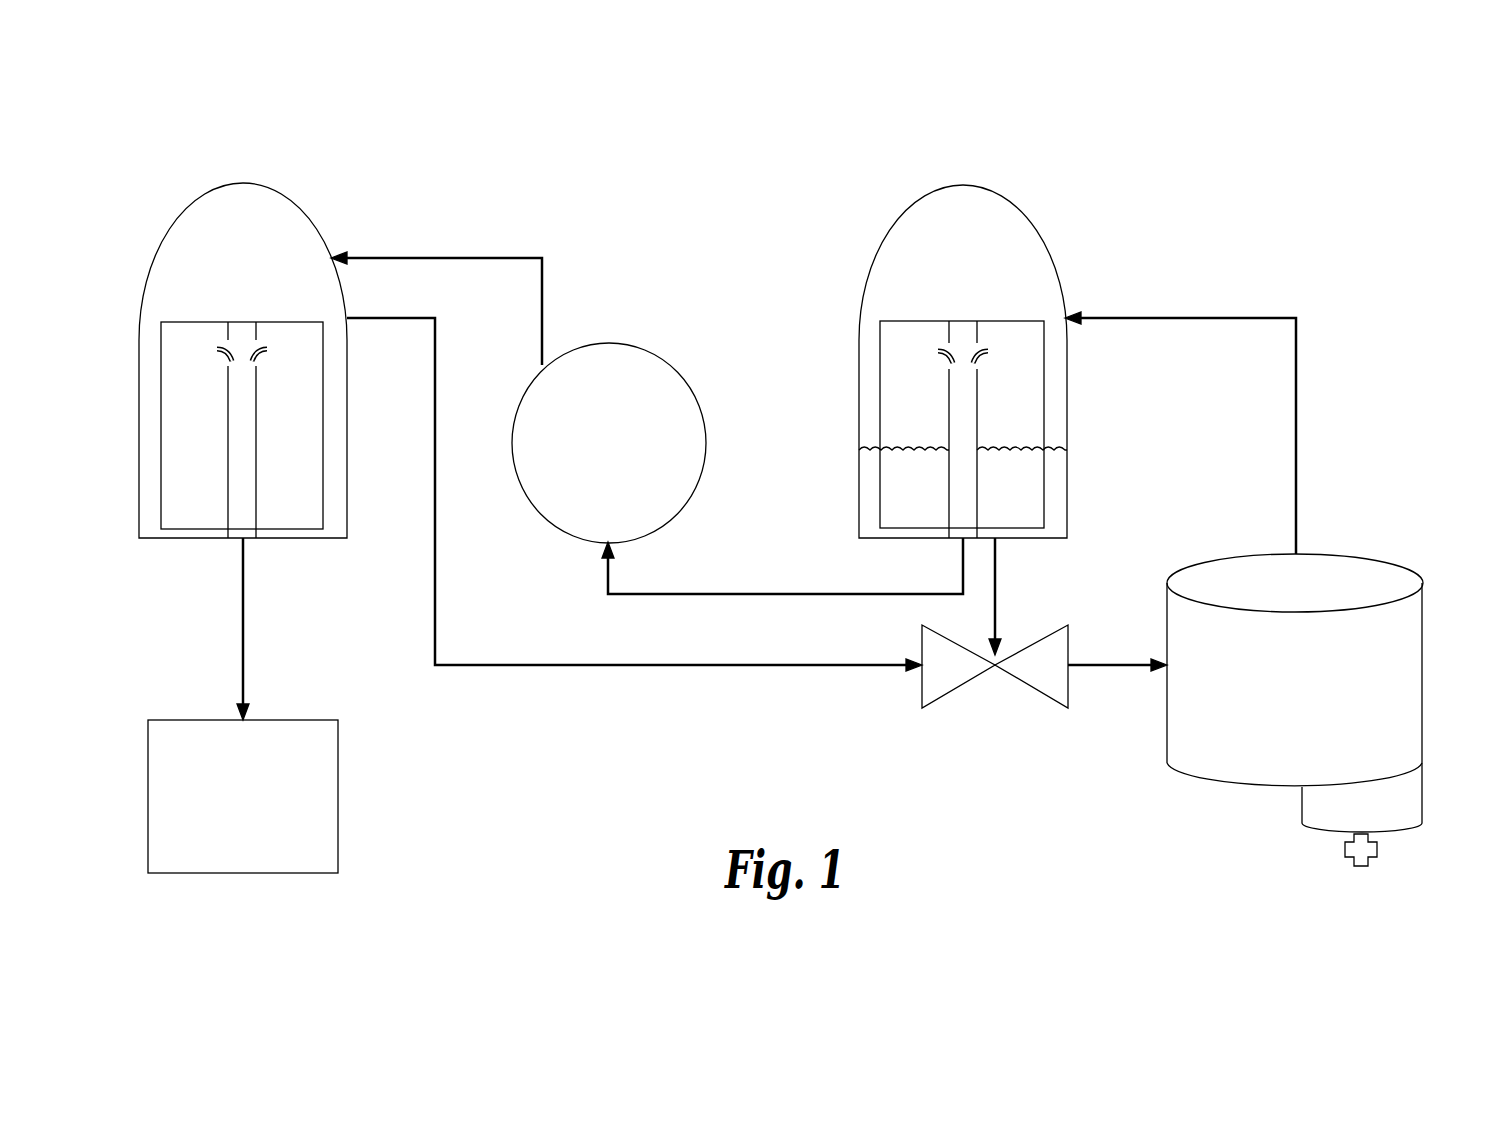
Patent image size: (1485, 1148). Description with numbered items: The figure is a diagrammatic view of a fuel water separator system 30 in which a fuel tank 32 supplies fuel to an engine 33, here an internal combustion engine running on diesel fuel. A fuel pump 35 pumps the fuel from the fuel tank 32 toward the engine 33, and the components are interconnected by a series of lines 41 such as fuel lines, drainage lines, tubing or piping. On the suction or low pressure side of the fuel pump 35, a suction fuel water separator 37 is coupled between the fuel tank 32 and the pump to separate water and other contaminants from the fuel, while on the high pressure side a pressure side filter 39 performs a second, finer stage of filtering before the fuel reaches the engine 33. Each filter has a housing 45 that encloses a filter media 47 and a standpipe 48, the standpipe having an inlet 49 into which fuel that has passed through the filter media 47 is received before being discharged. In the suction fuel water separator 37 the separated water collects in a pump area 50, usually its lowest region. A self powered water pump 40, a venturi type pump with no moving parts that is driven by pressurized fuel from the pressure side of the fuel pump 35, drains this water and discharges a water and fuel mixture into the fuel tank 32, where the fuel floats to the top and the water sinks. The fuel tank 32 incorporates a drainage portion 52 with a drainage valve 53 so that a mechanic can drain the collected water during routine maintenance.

The fuel water separator system 30 is at (992, 168).
The fuel tank 32 is at (1375, 646).
The engine 33 is at (294, 720).
The fuel pump 35 is at (644, 346).
The suction fuel water separator 37 is at (1027, 222).
The pressure side filter 39 is at (305, 218).
The self powered water pump 40 is at (1015, 643).
The lines 41 is at (1193, 303).
The housing 45 is at (163, 243).
The filter media 47 is at (305, 446).
The standpipe 48 is at (228, 470).
The inlet 49 is at (271, 363).
The pump area 50 is at (1046, 498).
The drainage portion 52 is at (1405, 797).
The drainage valve 53 is at (1370, 856).